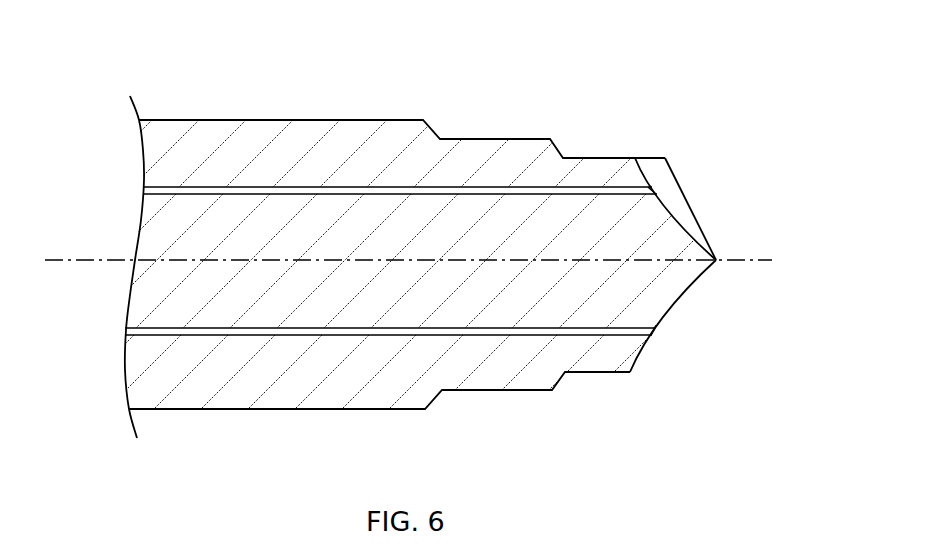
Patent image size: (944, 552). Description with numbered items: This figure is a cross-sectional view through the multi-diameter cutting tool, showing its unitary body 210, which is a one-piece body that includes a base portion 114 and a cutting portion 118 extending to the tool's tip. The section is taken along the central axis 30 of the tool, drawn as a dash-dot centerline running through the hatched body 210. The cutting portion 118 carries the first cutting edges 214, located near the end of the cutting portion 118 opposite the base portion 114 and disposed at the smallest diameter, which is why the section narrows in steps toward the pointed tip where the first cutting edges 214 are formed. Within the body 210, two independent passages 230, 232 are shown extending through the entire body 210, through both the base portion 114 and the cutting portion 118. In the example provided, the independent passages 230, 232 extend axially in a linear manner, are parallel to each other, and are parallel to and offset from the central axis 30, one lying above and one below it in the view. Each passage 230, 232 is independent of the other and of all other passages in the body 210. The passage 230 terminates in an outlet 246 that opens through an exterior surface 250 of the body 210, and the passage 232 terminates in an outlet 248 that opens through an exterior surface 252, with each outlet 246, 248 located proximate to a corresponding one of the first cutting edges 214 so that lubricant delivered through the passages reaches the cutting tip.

The central axis 30 is at (73, 256).
The base portion 114 is at (183, 398).
The cutting portion 118 is at (483, 153).
The unitary body 210 is at (247, 409).
The first cutting edges 214 is at (672, 172).
The independent passage 230 is at (237, 187).
The independent passage 232 is at (288, 335).
The outlet 246 is at (653, 187).
The outlet 248 is at (655, 330).
The exterior surface 250 is at (645, 168).
The exterior surface 252 is at (640, 357).